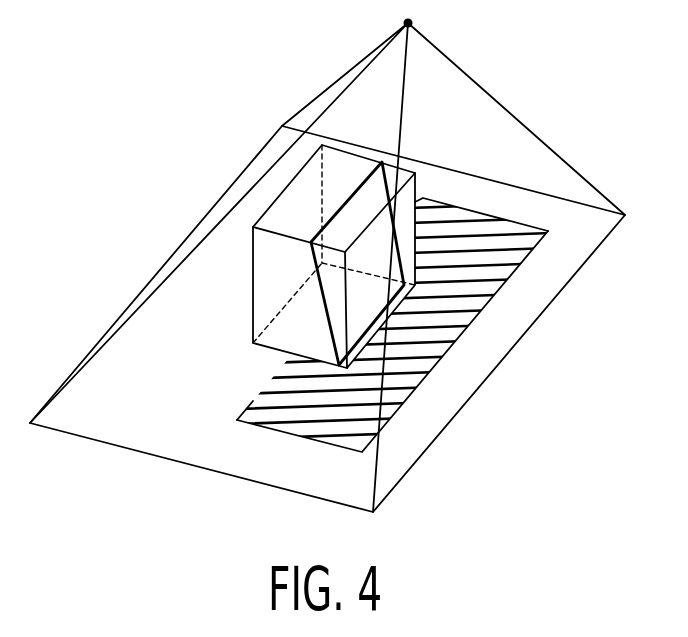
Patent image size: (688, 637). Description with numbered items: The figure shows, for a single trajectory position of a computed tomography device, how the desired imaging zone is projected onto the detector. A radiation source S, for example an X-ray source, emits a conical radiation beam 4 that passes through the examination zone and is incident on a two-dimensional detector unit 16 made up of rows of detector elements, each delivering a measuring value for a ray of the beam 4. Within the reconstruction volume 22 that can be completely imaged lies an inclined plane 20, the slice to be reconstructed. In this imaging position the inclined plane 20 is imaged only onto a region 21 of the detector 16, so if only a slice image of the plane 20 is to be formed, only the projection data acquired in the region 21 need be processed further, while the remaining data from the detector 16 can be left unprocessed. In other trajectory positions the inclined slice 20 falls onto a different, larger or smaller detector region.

The radiation source S is at (400, 22).
The radiation beam 4 is at (557, 155).
The detector unit 16 is at (533, 327).
The inclined plane 20 is at (313, 300).
The detector region 21 is at (253, 392).
The reconstruction volume 22 is at (253, 240).